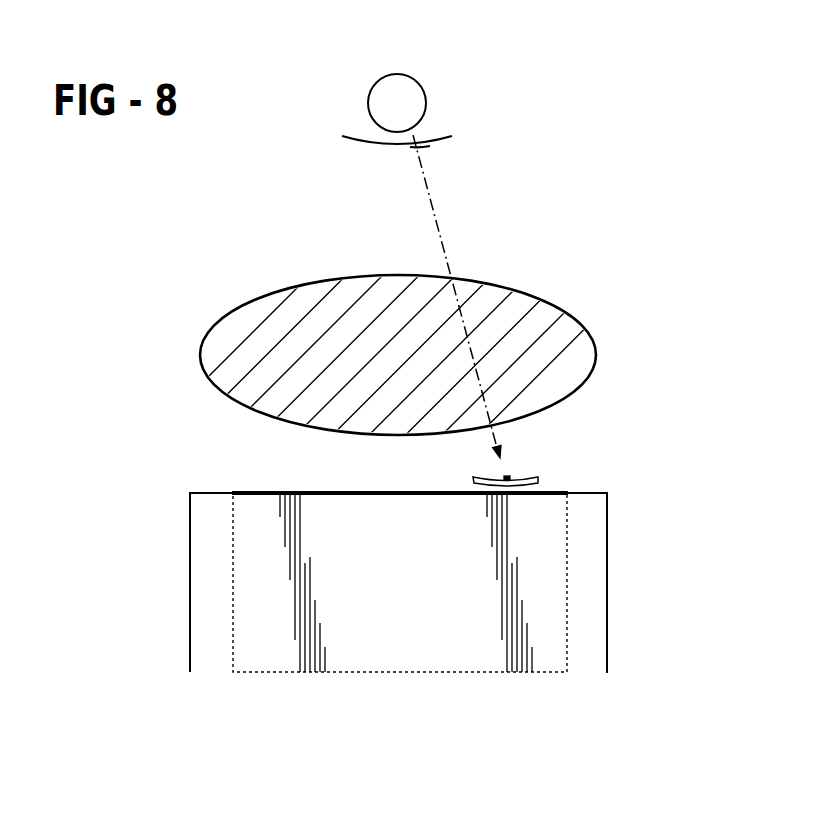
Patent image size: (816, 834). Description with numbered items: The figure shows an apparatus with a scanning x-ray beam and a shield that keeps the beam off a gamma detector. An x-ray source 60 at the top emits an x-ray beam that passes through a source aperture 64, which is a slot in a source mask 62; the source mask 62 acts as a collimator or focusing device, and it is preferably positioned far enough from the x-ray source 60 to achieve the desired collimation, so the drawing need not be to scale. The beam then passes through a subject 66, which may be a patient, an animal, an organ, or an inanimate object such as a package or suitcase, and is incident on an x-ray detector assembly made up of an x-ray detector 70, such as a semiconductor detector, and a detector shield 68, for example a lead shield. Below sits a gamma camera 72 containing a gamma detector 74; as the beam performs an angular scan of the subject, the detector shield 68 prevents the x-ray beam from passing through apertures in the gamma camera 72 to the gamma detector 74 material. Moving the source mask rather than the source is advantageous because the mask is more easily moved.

The x-ray source 60 is at (400, 99).
The source mask 62 is at (347, 141).
The source aperture 64 is at (420, 147).
The subject 66 is at (537, 313).
The detector shield 68 is at (540, 478).
The x-ray detector 70 is at (507, 477).
The gamma camera 72 is at (587, 535).
The gamma detector 74 is at (401, 596).